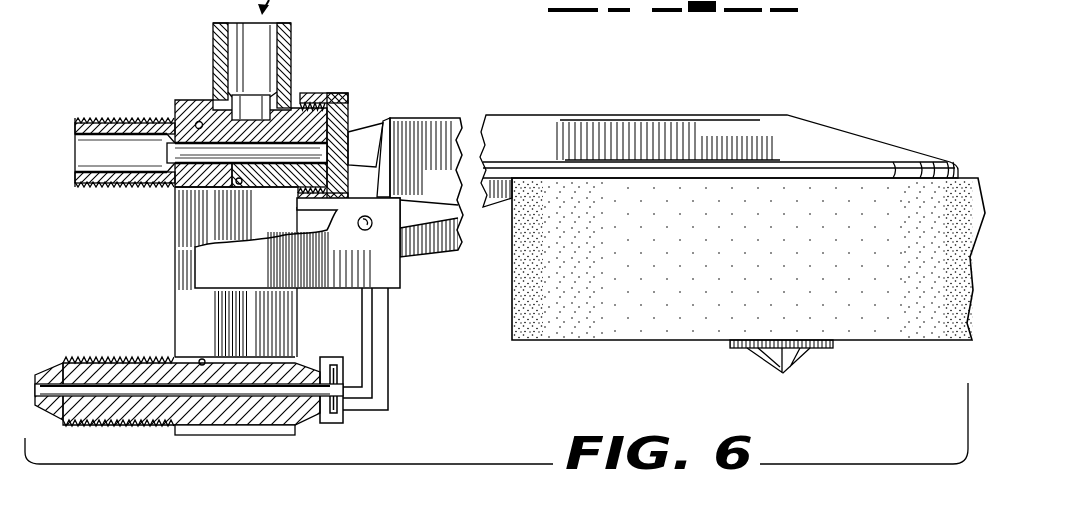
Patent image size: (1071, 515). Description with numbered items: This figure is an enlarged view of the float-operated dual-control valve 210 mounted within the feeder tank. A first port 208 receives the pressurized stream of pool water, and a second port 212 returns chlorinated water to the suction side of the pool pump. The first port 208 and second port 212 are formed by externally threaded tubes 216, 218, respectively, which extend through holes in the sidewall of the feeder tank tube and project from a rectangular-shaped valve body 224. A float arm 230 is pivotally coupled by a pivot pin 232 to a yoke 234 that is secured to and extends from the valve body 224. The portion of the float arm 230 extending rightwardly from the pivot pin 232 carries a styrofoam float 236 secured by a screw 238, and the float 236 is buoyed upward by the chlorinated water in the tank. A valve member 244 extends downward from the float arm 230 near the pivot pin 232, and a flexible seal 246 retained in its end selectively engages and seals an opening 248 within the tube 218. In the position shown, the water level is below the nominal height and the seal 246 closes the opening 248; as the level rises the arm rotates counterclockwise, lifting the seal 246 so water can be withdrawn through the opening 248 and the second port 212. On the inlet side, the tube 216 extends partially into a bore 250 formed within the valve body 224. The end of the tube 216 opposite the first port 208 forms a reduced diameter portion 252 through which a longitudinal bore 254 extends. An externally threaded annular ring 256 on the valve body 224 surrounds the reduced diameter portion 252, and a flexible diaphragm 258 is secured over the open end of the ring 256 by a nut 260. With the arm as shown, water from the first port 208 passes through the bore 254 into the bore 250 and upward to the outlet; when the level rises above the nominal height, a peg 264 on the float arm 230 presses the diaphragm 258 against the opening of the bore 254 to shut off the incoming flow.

The first port 208 is at (74, 152).
The externally threaded tube 216 is at (129, 118).
The longitudinal bore 254 is at (210, 138).
The reduced diameter portion 252 is at (307, 133).
The externally threaded annular ring 256 is at (326, 108).
The nut 260 is at (349, 99).
The peg 264 is at (363, 147).
The float-operated dual-control valve 210 is at (412, 100).
The float arm 230 is at (462, 120).
The flexible diaphragm 258 is at (240, 184).
The bore 250 is at (242, 188).
The valve body 224 is at (185, 221).
The pivot pin 232 is at (365, 230).
The yoke 234 is at (327, 272).
The valve member 244 is at (386, 354).
The flexible seal 246 is at (346, 396).
The opening 248 is at (321, 397).
The second port 212 is at (37, 386).
The externally threaded tube 218 is at (155, 368).
The styrofoam float 236 is at (578, 338).
The screw 238 is at (788, 372).